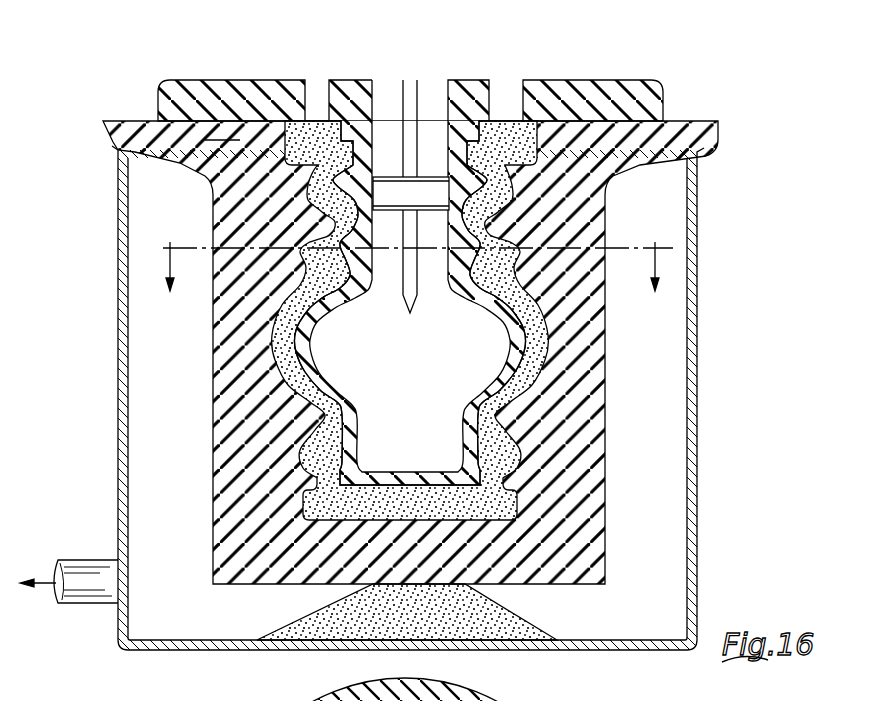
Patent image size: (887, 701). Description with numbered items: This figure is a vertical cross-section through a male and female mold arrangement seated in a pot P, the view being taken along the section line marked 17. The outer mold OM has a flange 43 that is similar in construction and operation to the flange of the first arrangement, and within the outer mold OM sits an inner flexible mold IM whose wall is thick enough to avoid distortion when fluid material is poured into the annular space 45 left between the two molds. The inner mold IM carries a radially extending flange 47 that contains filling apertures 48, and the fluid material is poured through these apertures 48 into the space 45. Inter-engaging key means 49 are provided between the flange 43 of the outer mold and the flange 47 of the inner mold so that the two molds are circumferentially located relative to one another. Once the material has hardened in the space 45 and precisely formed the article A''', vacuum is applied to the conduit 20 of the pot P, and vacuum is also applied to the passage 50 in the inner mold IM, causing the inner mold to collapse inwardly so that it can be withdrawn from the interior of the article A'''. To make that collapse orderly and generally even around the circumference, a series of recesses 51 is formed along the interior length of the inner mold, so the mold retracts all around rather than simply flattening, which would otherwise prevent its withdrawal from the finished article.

The section line 17- 17 is at (415, 253).
The conduit 20 is at (66, 604).
The flange 43 is at (433, 335).
The annular space 45 is at (458, 279).
The radially extending flange 47 is at (418, 87).
The filling apertures 48 is at (420, 259).
The inter-engaging key means 49 is at (220, 130).
The passage 50 is at (446, 108).
The recesses 51 is at (403, 84).
The article A''' is at (458, 320).
The inner flexible mold IM is at (450, 292).
The outer mold OM is at (605, 368).
The pot P is at (702, 402).